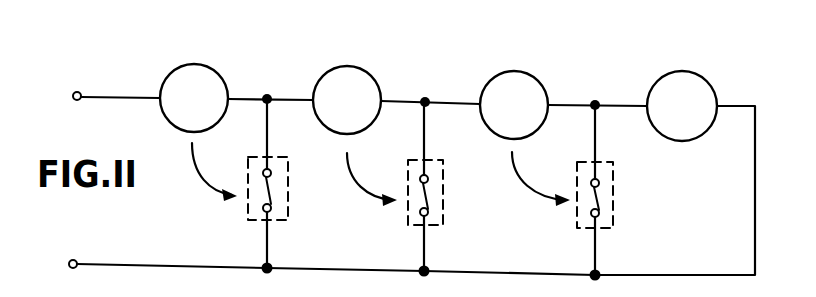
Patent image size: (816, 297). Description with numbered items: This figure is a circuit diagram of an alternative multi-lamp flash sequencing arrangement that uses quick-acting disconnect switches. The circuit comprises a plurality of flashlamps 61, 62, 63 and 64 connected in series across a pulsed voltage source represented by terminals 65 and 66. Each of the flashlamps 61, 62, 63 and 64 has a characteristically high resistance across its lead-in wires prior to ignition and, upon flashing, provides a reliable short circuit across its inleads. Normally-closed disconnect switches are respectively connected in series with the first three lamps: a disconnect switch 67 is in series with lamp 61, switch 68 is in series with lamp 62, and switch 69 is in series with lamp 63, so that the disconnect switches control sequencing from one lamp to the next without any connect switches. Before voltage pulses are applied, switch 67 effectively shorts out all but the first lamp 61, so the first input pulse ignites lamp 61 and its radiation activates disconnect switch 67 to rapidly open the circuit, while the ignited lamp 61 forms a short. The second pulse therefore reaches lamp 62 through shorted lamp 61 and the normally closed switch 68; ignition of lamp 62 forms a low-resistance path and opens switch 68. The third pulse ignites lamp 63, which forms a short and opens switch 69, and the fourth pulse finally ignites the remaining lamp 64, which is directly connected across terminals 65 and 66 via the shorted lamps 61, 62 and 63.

The flashlamp 61 is at (192, 72).
The flashlamp 62 is at (343, 78).
The flashlamp 63 is at (513, 78).
The flashlamp 64 is at (679, 78).
The terminal 65 is at (90, 70).
The terminal 66 is at (68, 263).
The disconnect switch 67 is at (290, 222).
The disconnect switch 68 is at (445, 228).
The disconnect switch 69 is at (613, 225).